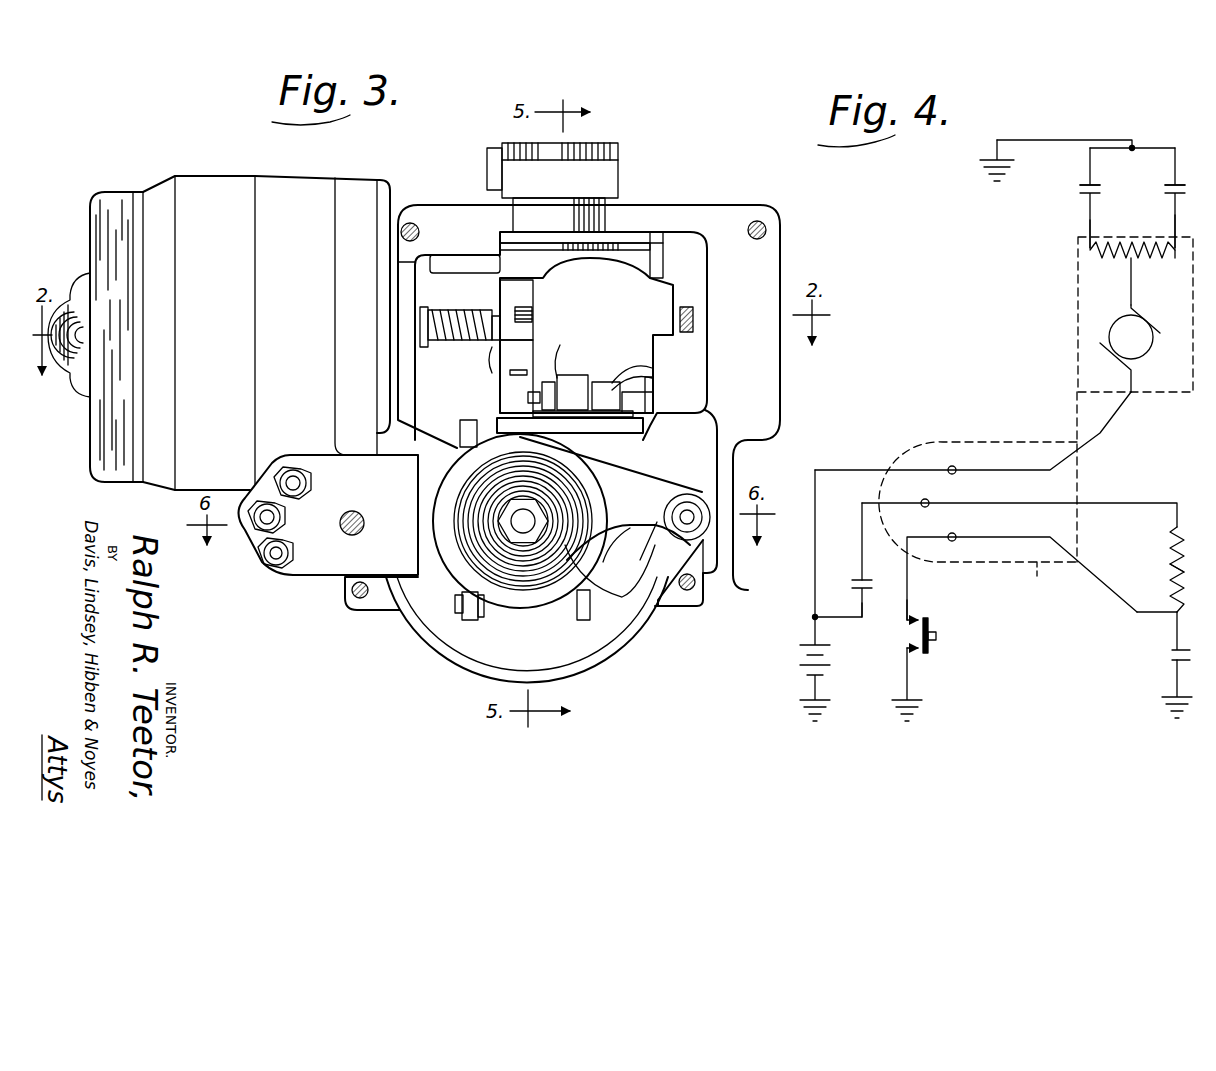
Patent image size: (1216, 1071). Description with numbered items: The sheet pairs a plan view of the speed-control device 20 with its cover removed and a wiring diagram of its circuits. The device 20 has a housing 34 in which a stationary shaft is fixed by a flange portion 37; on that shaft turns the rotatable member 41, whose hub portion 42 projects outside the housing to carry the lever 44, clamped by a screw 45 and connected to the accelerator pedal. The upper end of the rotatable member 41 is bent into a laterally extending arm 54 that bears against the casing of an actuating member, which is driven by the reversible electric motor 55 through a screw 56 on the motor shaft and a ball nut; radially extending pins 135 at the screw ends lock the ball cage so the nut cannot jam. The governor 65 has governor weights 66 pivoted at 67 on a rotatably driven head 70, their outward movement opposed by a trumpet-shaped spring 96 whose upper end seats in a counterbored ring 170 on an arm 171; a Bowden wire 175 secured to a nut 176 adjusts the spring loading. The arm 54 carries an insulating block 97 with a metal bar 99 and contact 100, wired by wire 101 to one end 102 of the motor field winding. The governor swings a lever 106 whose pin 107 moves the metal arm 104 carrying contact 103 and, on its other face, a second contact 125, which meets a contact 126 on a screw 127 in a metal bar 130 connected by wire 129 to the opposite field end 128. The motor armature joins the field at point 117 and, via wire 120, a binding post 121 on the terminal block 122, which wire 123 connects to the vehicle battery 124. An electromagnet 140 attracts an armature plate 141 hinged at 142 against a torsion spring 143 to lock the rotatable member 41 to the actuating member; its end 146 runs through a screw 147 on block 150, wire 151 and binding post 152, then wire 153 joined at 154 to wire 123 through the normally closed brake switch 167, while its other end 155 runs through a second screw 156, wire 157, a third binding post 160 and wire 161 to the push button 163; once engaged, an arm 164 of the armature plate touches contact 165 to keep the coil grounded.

In FIG. 3, the device 20 is at (783, 245).
In FIG. 3, the housing 34 is at (735, 462).
In FIG. 3, the flange portion 37 is at (443, 258).
In FIG. 3, the rotatable member 41 is at (642, 236).
In FIG. 3, the hub portion 42 is at (612, 212).
In FIG. 3, the lever 44 is at (608, 143).
In FIG. 3, the screw 45 is at (492, 150).
In FIG. 3, the laterally extending portion 54 is at (680, 285).
In FIG. 3, the electric motor 55 is at (210, 185).
In FIG. 4, the electric motor 55 is at (1146, 345).
In FIG. 3, the screw 56 is at (455, 322).
In FIG. 3, the governor 65 is at (430, 600).
In FIG. 3, the governor weights 66 is at (470, 428).
In FIG. 3, the pivot 67 is at (468, 607).
In FIG. 3, the head 70 is at (640, 558).
In FIG. 3, the trumpet-shaped spring 96 is at (600, 600).
In FIG. 3, the insulating block 97 is at (645, 405).
In FIG. 3, the metal bar 99 is at (653, 393).
In FIG. 3, the contact 100 is at (648, 383).
In FIG. 4, the contact 100 is at (1166, 196).
In FIG. 4, the wire 101 is at (1177, 228).
In FIG. 4, the end of field winding 102 is at (1176, 260).
In FIG. 3, the contact 103 is at (645, 372).
In FIG. 4, the contact 103 is at (1166, 185).
In FIG. 3, the metal arm 104 is at (620, 385).
In FIG. 3, the lever 106 is at (617, 440).
In FIG. 3, the pin 107 is at (645, 430).
In FIG. 4, the point 117 is at (1128, 262).
In FIG. 4, the wire 120 is at (1100, 438).
In FIG. 3, the binding post 121 is at (293, 478).
In FIG. 4, the binding post 121 is at (952, 466).
In FIG. 3, the terminal block 122 is at (330, 565).
In FIG. 4, the terminal block 122 is at (1035, 581).
In FIG. 4, the wire 123 is at (815, 575).
In FIG. 4, the battery 124 is at (805, 660).
In FIG. 3, the second contact 125 is at (598, 393).
In FIG. 4, the second contact 125 is at (1083, 185).
In FIG. 3, the contact 126 is at (580, 355).
In FIG. 4, the contact 126 is at (1080, 196).
In FIG. 3, the screw 127 is at (528, 400).
In FIG. 4, the end of field winding 128 is at (1090, 250).
In FIG. 4, the wire 129 is at (1088, 222).
In FIG. 3, the metal bar 130 is at (548, 382).
In FIG. 3, the pin 135 is at (445, 305).
In FIG. 4, the electromagnet 140 is at (1170, 560).
In FIG. 3, the armature plate 141 is at (663, 263).
In FIG. 3, the hinge 142 is at (520, 275).
In FIG. 3, the torsion spring 143 is at (527, 314).
In FIG. 4, the end of electromagnet 146 is at (1170, 532).
In FIG. 3, the screw 147 is at (495, 318).
In FIG. 3, the block 150 is at (447, 262).
In FIG. 4, the wire 151 is at (1130, 503).
In FIG. 3, the binding post 152 is at (268, 520).
In FIG. 4, the binding post 152 is at (923, 500).
In FIG. 4, the wire 153 is at (862, 548).
In FIG. 4, the connection point 154 is at (815, 627).
In FIG. 4, the end of electromagnet 155 is at (1176, 606).
In FIG. 3, the second screw 156 is at (490, 357).
In FIG. 4, the wire 157 is at (1105, 590).
In FIG. 3, the binding post 160 is at (505, 375).
In FIG. 4, the binding post 160 is at (952, 542).
In FIG. 4, the wire 161 is at (907, 597).
In FIG. 4, the push button 163 is at (930, 645).
In FIG. 4, the arm 164 is at (1172, 663).
In FIG. 4, the contact 165 is at (1176, 652).
In FIG. 4, the switch 167 is at (872, 605).
In FIG. 3, the counterbored ring 170 is at (548, 592).
In FIG. 3, the arm 171 is at (650, 545).
In FIG. 3, the Bowden wire 175 is at (687, 509).
In FIG. 3, the nut 176 is at (708, 590).